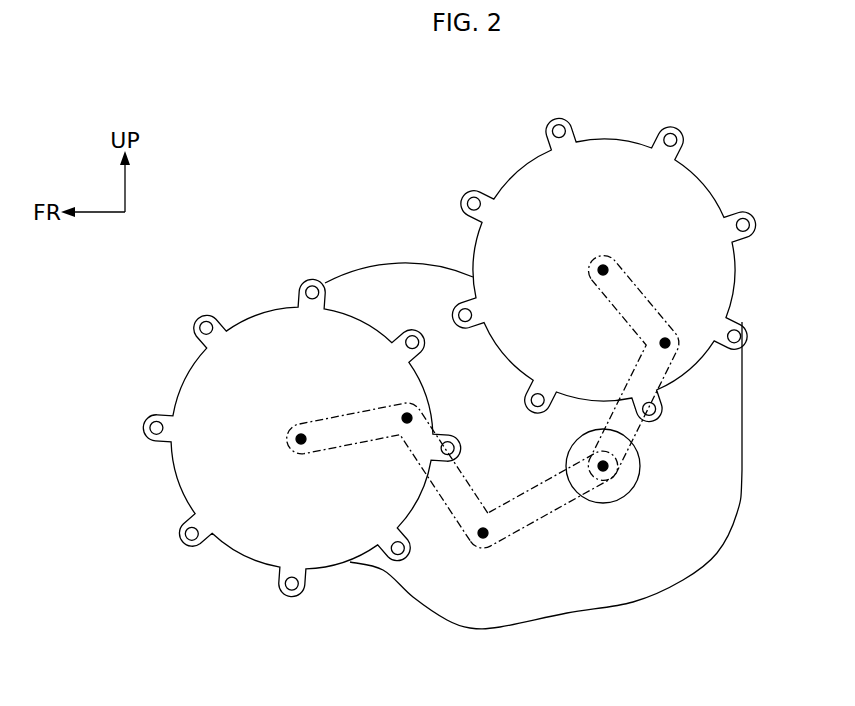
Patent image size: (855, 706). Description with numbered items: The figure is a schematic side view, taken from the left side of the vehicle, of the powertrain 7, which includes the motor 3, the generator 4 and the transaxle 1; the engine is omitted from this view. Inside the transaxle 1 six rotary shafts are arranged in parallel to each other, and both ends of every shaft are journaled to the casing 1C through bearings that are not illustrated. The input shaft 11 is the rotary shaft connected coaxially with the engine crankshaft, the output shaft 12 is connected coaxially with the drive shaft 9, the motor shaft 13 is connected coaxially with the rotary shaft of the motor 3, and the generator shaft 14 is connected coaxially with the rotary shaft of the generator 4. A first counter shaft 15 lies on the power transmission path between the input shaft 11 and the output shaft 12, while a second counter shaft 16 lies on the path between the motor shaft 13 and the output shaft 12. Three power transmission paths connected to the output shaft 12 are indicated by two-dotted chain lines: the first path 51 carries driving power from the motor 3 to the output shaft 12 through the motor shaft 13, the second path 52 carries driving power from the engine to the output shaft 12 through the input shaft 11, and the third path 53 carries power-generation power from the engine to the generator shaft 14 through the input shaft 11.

The transaxle 1 is at (420, 262).
The casing 1C is at (627, 605).
The motor 3 is at (707, 184).
The generator 4 is at (263, 311).
The powertrain 7 is at (365, 214).
The drive shaft 9 is at (640, 456).
The input shaft 11 is at (405, 413).
The output shaft 12 is at (606, 471).
The motor shaft 13 is at (603, 265).
The generator shaft 14 is at (296, 438).
The first counter shaft 15 is at (483, 540).
The second counter shaft 16 is at (672, 350).
The first path 51 is at (633, 270).
The second path 52 is at (566, 505).
The third path 53 is at (347, 417).